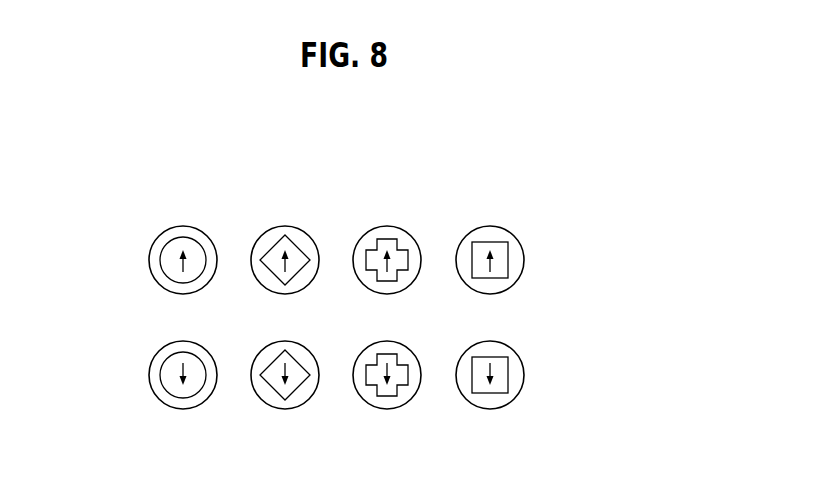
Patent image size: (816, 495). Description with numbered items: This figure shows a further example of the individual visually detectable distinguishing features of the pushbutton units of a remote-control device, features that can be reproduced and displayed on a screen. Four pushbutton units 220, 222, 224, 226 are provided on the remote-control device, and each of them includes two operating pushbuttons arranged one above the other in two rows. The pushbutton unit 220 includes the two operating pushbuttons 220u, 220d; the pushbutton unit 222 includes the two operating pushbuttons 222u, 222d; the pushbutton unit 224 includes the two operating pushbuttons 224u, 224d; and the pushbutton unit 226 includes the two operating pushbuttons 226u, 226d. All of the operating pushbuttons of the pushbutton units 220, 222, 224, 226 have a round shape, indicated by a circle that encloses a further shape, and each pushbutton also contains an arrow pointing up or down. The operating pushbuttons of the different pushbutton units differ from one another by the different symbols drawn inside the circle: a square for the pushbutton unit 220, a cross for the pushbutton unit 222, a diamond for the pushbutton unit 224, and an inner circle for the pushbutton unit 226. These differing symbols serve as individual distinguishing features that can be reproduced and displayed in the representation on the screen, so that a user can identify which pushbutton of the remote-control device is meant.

The pushbutton unit 220 is at (488, 212).
The pushbutton unit 222 is at (389, 212).
The pushbutton unit 224 is at (285, 212).
The pushbutton unit 226 is at (183, 212).
The operating pushbutton 220u is at (523, 255).
The operating pushbutton 220d is at (523, 370).
The operating pushbutton 222u is at (385, 293).
The operating pushbutton 222d is at (382, 408).
The operating pushbutton 224u is at (283, 293).
The operating pushbutton 224d is at (280, 408).
The operating pushbutton 226u is at (150, 254).
The operating pushbutton 226d is at (150, 369).